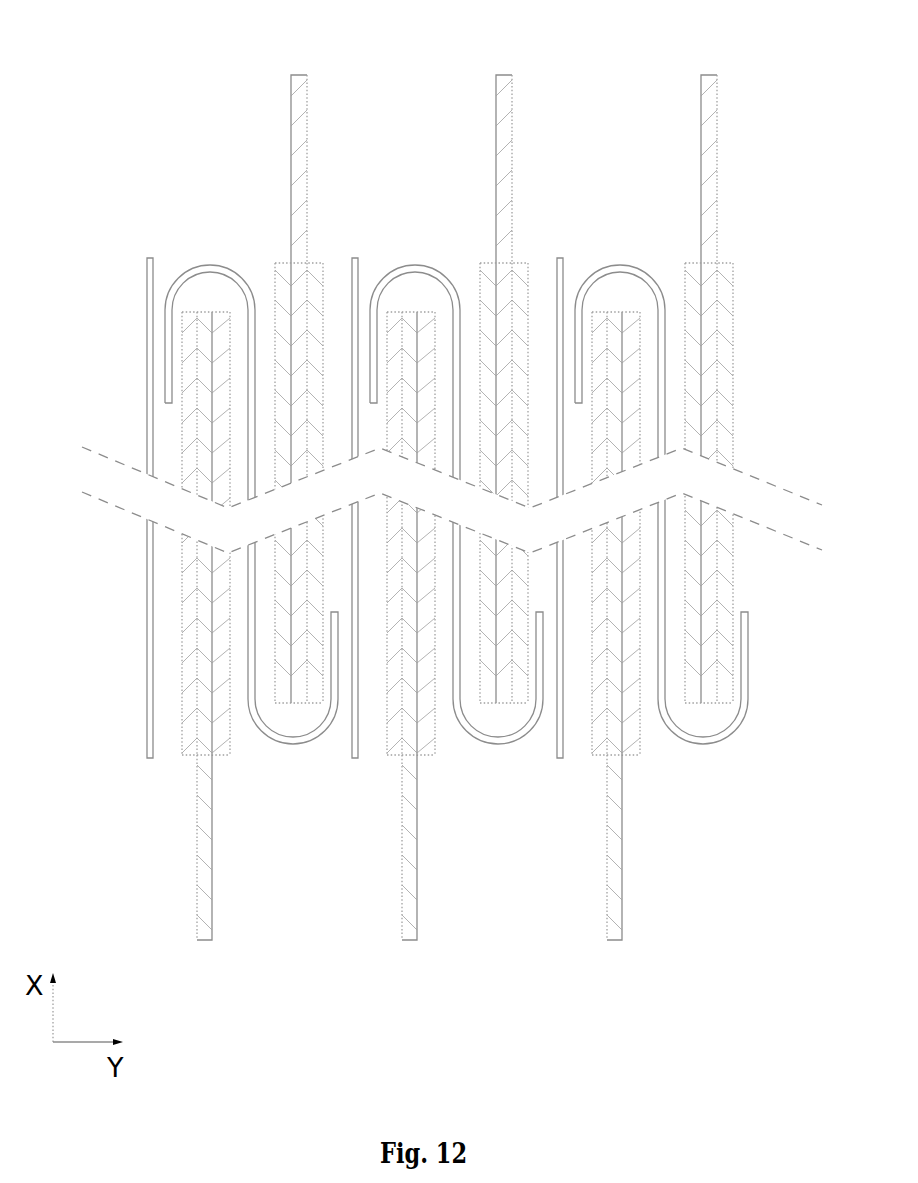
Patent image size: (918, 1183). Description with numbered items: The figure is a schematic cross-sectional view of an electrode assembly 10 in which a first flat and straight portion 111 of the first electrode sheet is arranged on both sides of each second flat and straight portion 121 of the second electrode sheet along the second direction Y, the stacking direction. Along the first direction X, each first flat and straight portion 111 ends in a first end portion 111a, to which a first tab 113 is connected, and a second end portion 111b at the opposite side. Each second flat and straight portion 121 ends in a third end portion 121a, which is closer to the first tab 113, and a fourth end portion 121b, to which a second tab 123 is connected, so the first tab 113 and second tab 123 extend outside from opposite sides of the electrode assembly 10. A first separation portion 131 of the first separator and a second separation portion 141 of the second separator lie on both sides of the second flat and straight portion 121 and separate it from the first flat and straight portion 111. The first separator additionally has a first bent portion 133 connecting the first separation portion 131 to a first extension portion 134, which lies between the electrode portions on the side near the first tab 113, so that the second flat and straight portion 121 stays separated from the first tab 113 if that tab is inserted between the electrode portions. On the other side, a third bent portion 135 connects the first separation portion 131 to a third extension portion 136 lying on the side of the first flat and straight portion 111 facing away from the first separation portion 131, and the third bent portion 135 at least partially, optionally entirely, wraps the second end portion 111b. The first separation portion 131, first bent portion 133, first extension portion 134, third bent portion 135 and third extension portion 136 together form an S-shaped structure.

The electrode assembly 10 is at (114, 37).
The first flat and straight portion 111 is at (257, 293).
The first end portion 111a is at (283, 262).
The second end portion 111b is at (497, 717).
The first tab 113 is at (297, 75).
The second flat and straight portion 121 is at (182, 675).
The third end portion 121a is at (418, 300).
The fourth end portion 121b is at (393, 757).
The second tab 123 is at (206, 945).
The first separation portion 131 is at (458, 327).
The first bent portion 133 is at (428, 267).
The first extension portion 134 is at (353, 317).
The third bent portion 135 is at (467, 742).
The third extension portion 136 is at (540, 680).
The second separation portion 141 is at (350, 742).